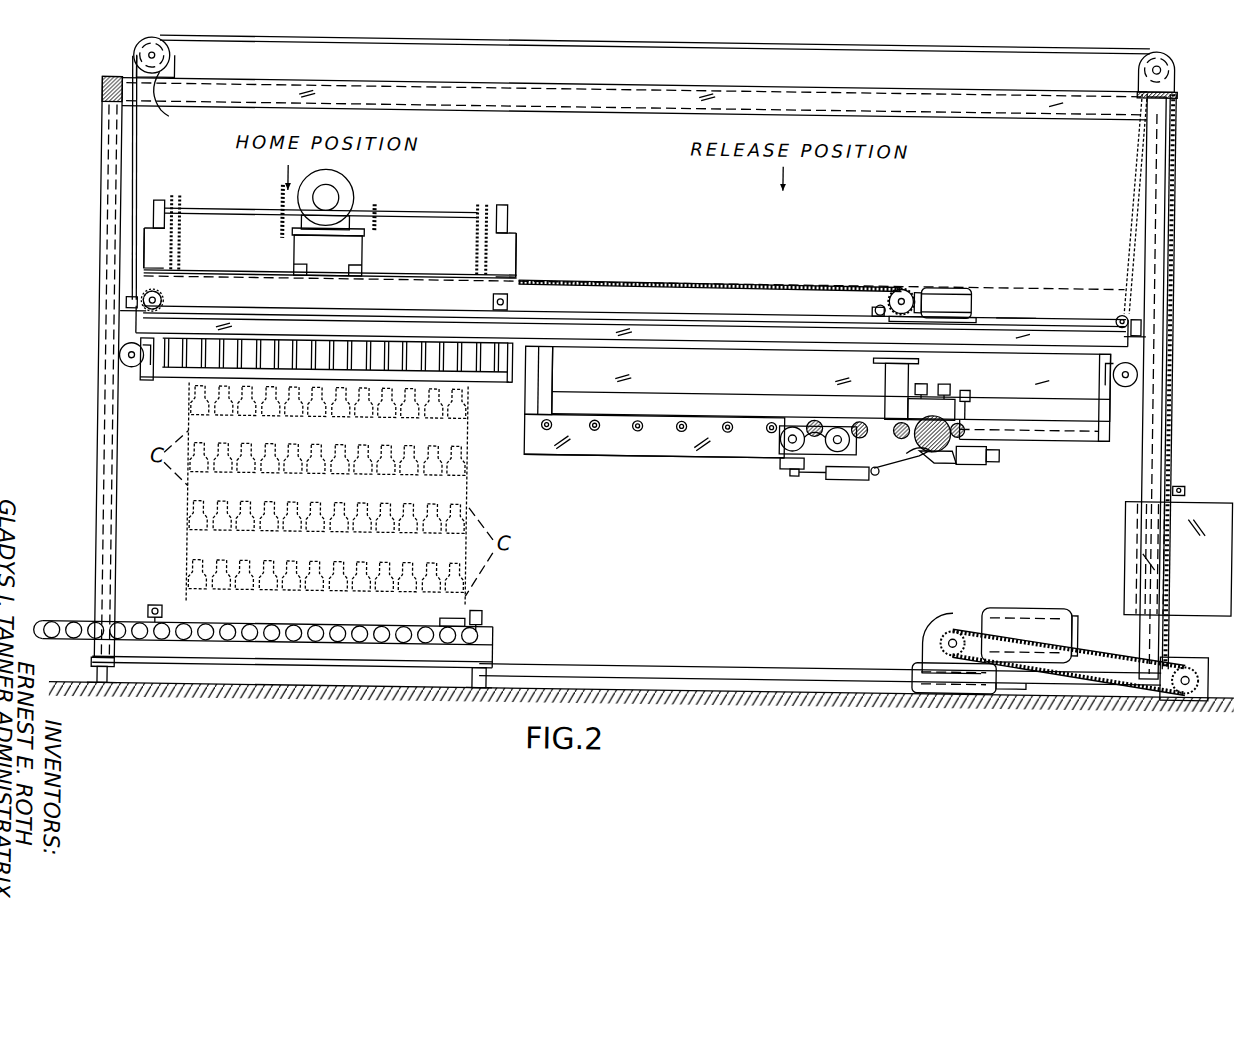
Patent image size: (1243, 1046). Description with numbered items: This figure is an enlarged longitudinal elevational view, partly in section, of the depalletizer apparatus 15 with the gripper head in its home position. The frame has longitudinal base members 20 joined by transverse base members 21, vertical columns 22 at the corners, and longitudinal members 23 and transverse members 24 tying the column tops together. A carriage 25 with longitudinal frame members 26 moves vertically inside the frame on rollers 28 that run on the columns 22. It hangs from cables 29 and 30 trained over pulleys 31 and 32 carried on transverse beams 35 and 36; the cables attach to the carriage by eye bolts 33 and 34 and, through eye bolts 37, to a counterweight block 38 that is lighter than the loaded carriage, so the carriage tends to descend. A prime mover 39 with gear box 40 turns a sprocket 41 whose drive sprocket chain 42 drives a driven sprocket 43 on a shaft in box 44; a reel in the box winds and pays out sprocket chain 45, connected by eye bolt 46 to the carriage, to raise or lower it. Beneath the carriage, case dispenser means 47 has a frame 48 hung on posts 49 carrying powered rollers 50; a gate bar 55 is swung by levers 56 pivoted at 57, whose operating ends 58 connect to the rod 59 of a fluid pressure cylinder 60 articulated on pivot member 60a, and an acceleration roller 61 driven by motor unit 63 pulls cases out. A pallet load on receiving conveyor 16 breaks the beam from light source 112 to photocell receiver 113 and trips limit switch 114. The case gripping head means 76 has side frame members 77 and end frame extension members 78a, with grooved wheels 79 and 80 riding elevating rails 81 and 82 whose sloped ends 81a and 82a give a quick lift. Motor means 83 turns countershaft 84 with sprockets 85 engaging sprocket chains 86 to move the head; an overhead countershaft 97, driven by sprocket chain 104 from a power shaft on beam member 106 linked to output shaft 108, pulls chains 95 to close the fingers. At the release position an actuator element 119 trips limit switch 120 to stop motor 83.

The depalletizer apparatus 15 is at (92, 206).
The receiving conveyor 16 is at (62, 615).
The longitudinal base members 20 is at (632, 662).
The transverse base members 21 is at (118, 676).
The vertical columns 22 is at (103, 424).
The longitudinal members 23 is at (648, 92).
The transverse members 24 is at (103, 90).
The carriage 25 is at (1020, 298).
The longitudinal frame members 26 is at (805, 341).
The rollers 28 is at (124, 355).
The cables 29 is at (140, 175).
The cables 30 is at (1137, 205).
The pulleys 31 is at (171, 55).
The pulleys 32 is at (1175, 58).
The eye bolts 33 is at (130, 303).
The eye bolts 34 is at (1145, 312).
The transverse beam 35 is at (170, 115).
The transverse beam 36 is at (1138, 81).
The eye bolts 37 is at (1191, 474).
The counterweight block 38 is at (1215, 548).
The prime mover 39 is at (1020, 596).
The gear box 40 is at (945, 606).
The sprocket 41 is at (957, 632).
The drive sprocket chain 42 is at (1115, 683).
The driven sprocket 43 is at (1192, 683).
The box 44 is at (1200, 643).
The sprocket chain 45 is at (1178, 222).
The eye bolt 46 is at (1120, 305).
The case dispenser means 47 is at (642, 456).
The frame 48 is at (600, 452).
The posts 49 is at (557, 370).
The rollers 50 is at (566, 452).
The gate bar 55 is at (955, 415).
The levers 56 is at (955, 452).
The pivot 57 is at (880, 452).
The operating end 58 is at (898, 457).
The rod 59 is at (883, 466).
The fluid pressure cylinder 60 is at (845, 472).
The pivot member 60a is at (812, 466).
The acceleration roller 61 is at (930, 448).
The motor unit 63 is at (1005, 444).
The case gripping head means 76 is at (444, 270).
The main side frame members 77 is at (360, 303).
The end frame extension members 78a is at (167, 262).
The grooved wheels 79 is at (162, 310).
The grooved wheels 80 is at (450, 310).
The elevating rails 81 is at (232, 318).
The sloped ends 81a is at (168, 306).
The elevating rails 82 is at (670, 318).
The sloped ends 82a is at (560, 318).
The motor means 83 is at (940, 277).
The countershaft 84 is at (908, 280).
The sprockets 85 is at (886, 294).
The sprocket chains 86 is at (668, 274).
The sprocket chains 95 is at (184, 244).
The overhead countershaft 97 is at (418, 216).
The sprocket chain 104 is at (380, 205).
The overhead beam member 106 is at (300, 262).
The output shaft 108 is at (345, 188).
The light source 112 is at (490, 610).
The photocell receiver 113 is at (156, 607).
The limit switch 114 is at (450, 616).
The limit switch actuator element 119 is at (497, 297).
The limit switch 120 is at (876, 302).